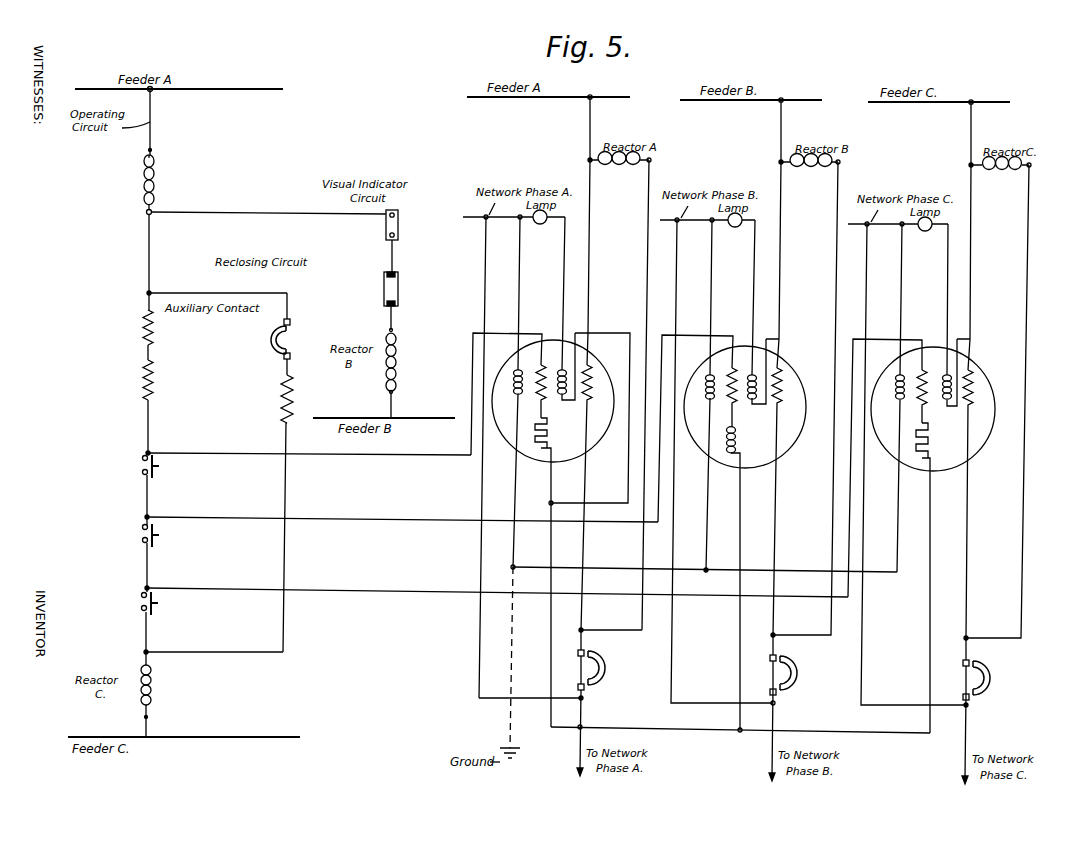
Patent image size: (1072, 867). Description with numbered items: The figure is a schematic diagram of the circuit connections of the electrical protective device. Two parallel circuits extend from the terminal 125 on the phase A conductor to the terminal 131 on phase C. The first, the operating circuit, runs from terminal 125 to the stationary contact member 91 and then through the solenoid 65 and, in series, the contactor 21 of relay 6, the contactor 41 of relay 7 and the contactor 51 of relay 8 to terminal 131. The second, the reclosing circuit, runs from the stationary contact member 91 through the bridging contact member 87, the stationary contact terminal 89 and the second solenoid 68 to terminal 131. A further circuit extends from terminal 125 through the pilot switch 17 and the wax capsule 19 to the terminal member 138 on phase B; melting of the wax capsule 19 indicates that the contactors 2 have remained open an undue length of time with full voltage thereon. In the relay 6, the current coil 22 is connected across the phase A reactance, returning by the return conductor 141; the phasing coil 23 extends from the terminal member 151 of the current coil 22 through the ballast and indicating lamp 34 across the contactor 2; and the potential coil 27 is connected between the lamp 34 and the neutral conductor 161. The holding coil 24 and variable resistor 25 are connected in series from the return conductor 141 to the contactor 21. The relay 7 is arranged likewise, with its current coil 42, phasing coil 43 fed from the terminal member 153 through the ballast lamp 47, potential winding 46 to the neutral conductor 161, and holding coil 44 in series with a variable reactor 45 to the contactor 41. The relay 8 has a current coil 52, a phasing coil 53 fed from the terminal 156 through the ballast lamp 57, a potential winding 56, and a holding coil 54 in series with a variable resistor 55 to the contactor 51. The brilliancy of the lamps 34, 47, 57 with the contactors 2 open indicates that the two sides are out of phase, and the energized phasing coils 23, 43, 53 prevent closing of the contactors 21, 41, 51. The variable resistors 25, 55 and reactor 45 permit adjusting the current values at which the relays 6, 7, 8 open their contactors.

The terminal 125 is at (152, 210).
The solenoid 65 is at (141, 341).
The stationary contact member 91 is at (291, 322).
The bridging contact member 87 is at (272, 341).
The stationary contact terminal 89 is at (291, 356).
The second solenoid 68 is at (311, 398).
The contactor 21 is at (152, 478).
The contactor 41 is at (152, 547).
The contactor 51 is at (151, 615).
The terminal 131 is at (148, 656).
The pilot switch 17 is at (386, 233).
The wax capsule 19 is at (398, 302).
The terminal member 138 is at (396, 334).
The ballast and indicating lamp 34 is at (541, 224).
The ballast lamp 47 is at (736, 227).
The ballast lamp 57 is at (926, 231).
The terminal member 151 is at (589, 333).
The terminal member 153 is at (780, 339).
The terminal 156 is at (971, 340).
The relay 6 is at (598, 447).
The relay 7 is at (790, 448).
The relay 8 is at (980, 450).
The potential coil 27 is at (512, 381).
The holding coil 24 is at (540, 366).
The phasing coil 23 is at (560, 362).
The current coil 22 is at (591, 387).
The variable resistor 25 is at (538, 446).
The potential winding 46 is at (706, 395).
The holding coil 44 is at (731, 370).
The phasing coil 43 is at (750, 370).
The current coil 42 is at (781, 390).
The variable reactor 45 is at (734, 453).
The potential winding 56 is at (896, 386).
The holding coil 54 is at (924, 370).
The phasing coil 53 is at (951, 383).
The current coil 52 is at (972, 392).
The variable resistor 55 is at (921, 460).
The contactor 2 is at (606, 668).
The neutral conductor 161 is at (686, 570).
The return conductor 141 is at (651, 728).